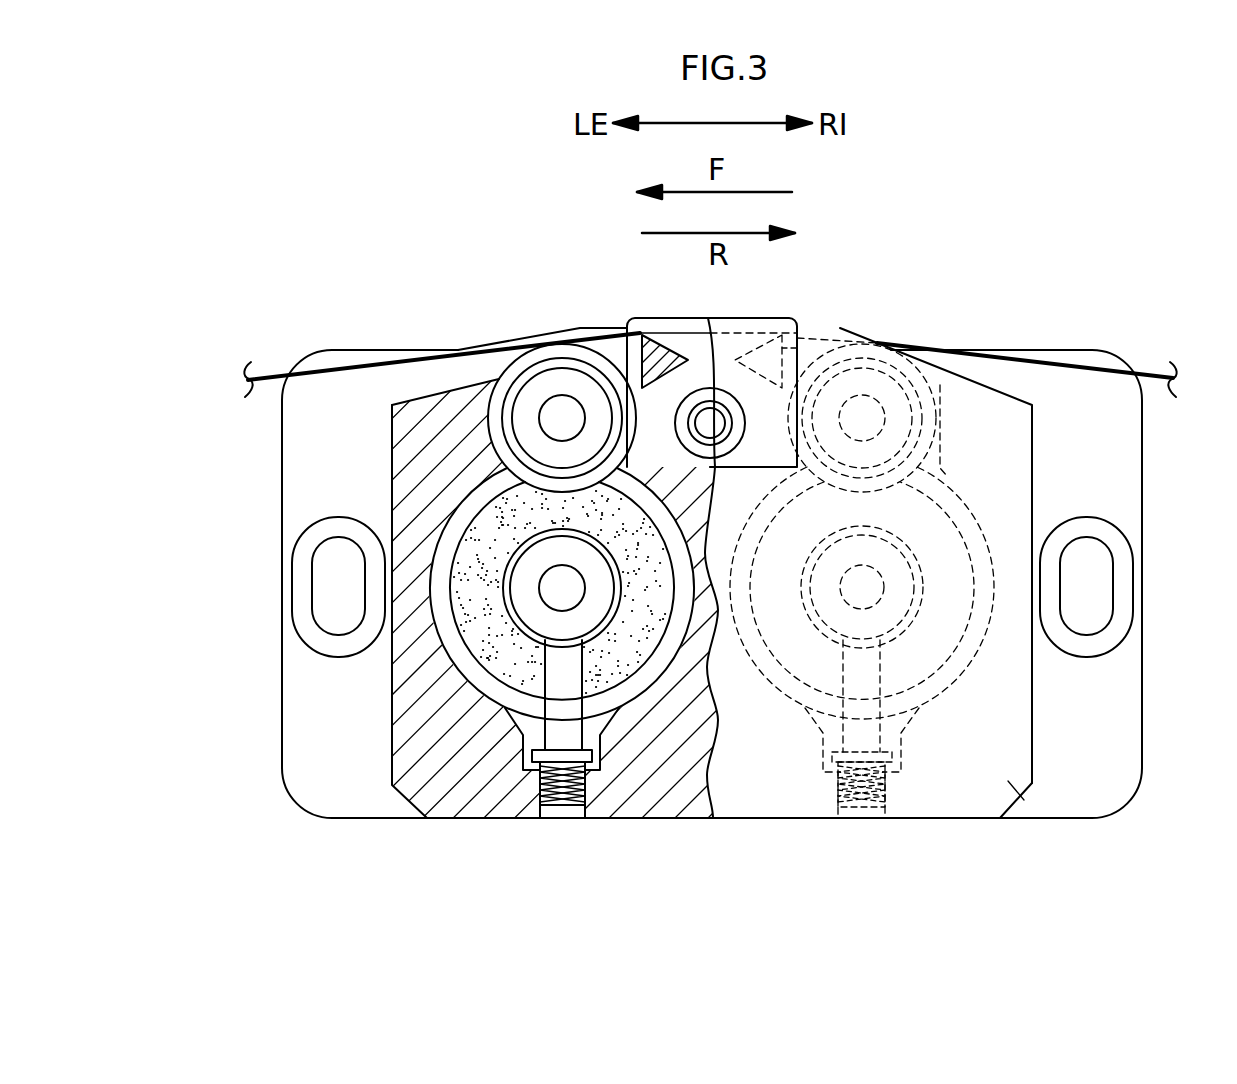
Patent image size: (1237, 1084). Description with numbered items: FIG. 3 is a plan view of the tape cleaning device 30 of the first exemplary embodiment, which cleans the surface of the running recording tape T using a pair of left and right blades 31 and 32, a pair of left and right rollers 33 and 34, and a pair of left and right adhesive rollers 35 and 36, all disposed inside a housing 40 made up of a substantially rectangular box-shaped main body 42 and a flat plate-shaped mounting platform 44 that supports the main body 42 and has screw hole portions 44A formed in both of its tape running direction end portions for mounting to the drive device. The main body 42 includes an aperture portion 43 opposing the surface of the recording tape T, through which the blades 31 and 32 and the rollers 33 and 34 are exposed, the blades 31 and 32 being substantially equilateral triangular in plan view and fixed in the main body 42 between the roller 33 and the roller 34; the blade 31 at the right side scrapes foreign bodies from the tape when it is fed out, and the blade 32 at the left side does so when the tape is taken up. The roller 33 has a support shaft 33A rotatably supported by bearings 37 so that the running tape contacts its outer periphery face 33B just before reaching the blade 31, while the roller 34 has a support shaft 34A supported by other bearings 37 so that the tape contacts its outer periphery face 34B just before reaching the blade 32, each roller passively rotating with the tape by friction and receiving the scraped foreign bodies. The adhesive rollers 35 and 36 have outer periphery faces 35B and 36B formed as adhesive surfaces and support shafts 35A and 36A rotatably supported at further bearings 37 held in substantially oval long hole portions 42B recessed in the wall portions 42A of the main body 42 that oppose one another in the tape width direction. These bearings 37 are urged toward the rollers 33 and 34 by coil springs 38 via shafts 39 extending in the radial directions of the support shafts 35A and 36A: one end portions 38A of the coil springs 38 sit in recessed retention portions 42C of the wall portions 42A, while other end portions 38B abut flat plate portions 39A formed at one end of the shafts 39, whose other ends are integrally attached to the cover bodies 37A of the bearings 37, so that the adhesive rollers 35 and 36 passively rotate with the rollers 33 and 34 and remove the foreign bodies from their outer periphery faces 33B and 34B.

The tape cleaning device 30 is at (1143, 831).
The blade 31 is at (805, 345).
The blade 32 is at (616, 338).
The roller 33 is at (952, 423).
The support shaft 33A is at (872, 407).
The outer periphery face 33B is at (935, 370).
The roller 34 is at (522, 435).
The support shaft 34A is at (556, 410).
The outer periphery face 34B is at (471, 420).
The adhesive roller 35 is at (870, 595).
The support shaft 35A is at (900, 592).
The outer periphery face 35B is at (857, 703).
The adhesive roller 36 is at (470, 670).
The support shaft 36A is at (523, 592).
The outer periphery face 36B is at (643, 707).
The bearing 37 is at (483, 390).
The cover body 37A is at (430, 690).
The coil spring 38 is at (560, 810).
The one end portion 38A is at (572, 810).
The other end portion 38B is at (537, 778).
The shaft 39 is at (575, 713).
The flat plate portion 39A is at (593, 763).
The housing 40 is at (1148, 495).
The main body 42 is at (1034, 750).
The wall portion 42A is at (1020, 790).
The long hole portion 42B is at (786, 670).
The retention portion 42C is at (548, 808).
The aperture portion 43 is at (497, 368).
The mounting platform 44 is at (303, 747).
The screw hole portion 44A is at (313, 580).
The recording tape T is at (1150, 372).